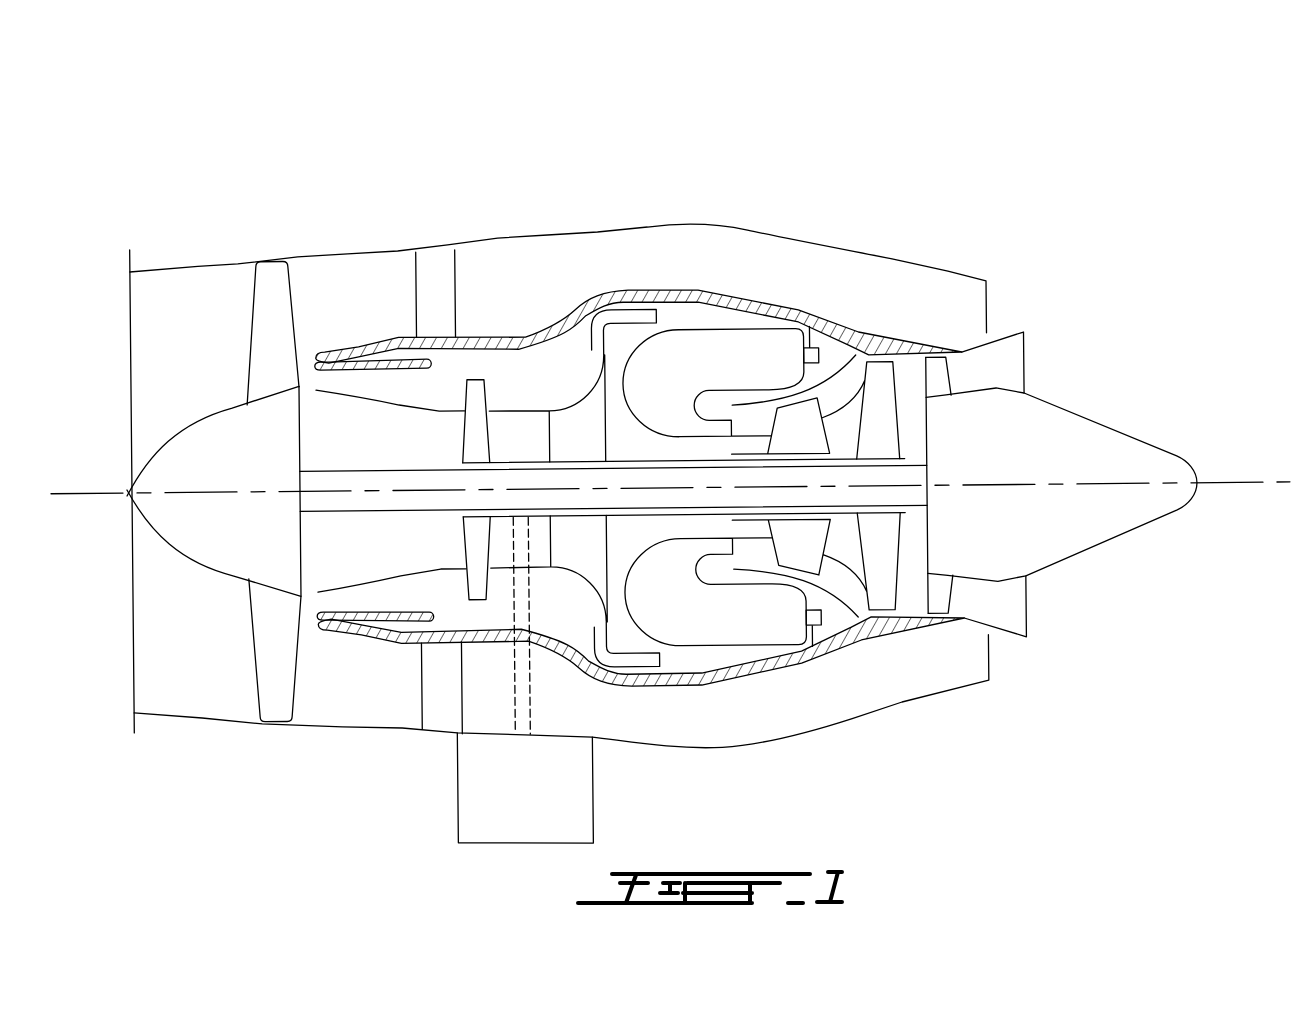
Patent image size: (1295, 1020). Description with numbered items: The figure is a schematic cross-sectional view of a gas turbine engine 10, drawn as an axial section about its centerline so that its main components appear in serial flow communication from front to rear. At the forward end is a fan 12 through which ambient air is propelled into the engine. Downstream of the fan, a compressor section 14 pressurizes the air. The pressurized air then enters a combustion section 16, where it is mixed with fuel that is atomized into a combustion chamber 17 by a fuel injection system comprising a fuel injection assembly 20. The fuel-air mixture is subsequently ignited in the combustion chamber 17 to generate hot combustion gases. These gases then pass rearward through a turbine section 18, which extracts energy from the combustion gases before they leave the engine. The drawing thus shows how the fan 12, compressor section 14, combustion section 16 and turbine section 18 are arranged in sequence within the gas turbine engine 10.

The gas turbine engine 10 is at (823, 162).
The fan 12 is at (272, 638).
The compressor section 14 is at (537, 400).
The combustion section 16 is at (716, 350).
The combustion chamber 17 is at (786, 348).
The turbine section 18 is at (847, 548).
The fuel injection assembly 20 is at (872, 352).